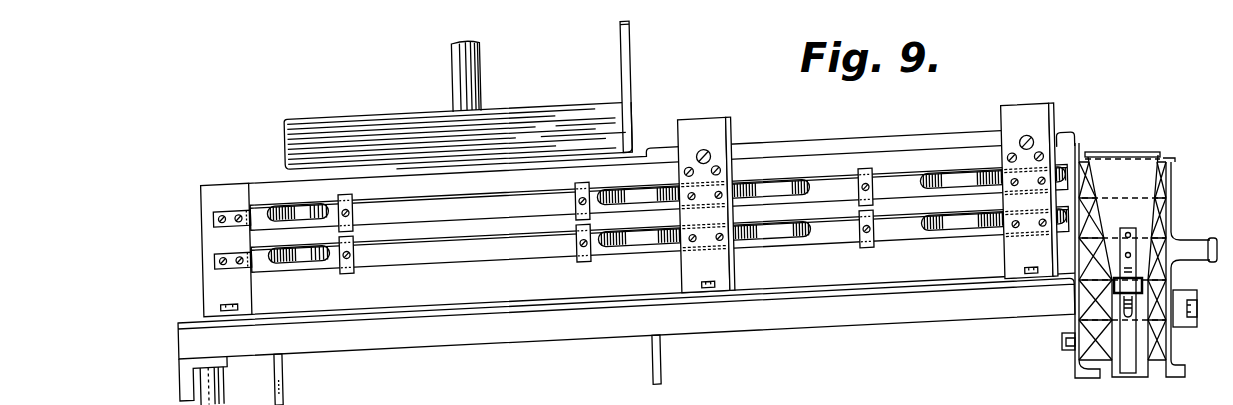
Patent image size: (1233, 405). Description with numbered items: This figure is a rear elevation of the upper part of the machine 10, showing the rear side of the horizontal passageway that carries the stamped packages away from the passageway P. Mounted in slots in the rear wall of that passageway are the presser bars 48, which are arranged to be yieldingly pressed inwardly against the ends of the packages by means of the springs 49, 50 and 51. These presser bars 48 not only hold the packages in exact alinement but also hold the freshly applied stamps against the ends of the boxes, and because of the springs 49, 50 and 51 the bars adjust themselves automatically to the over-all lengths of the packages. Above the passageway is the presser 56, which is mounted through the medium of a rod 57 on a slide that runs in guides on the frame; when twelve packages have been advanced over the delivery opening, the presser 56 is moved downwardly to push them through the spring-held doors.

The machine frame 10 is at (157, 260).
The presser bars 48 is at (455, 248).
The spring 49 is at (302, 260).
The spring 50 is at (798, 230).
The spring 51 is at (965, 228).
The presser 56 is at (330, 142).
The rod 57 is at (467, 80).
The passageway P is at (747, 128).